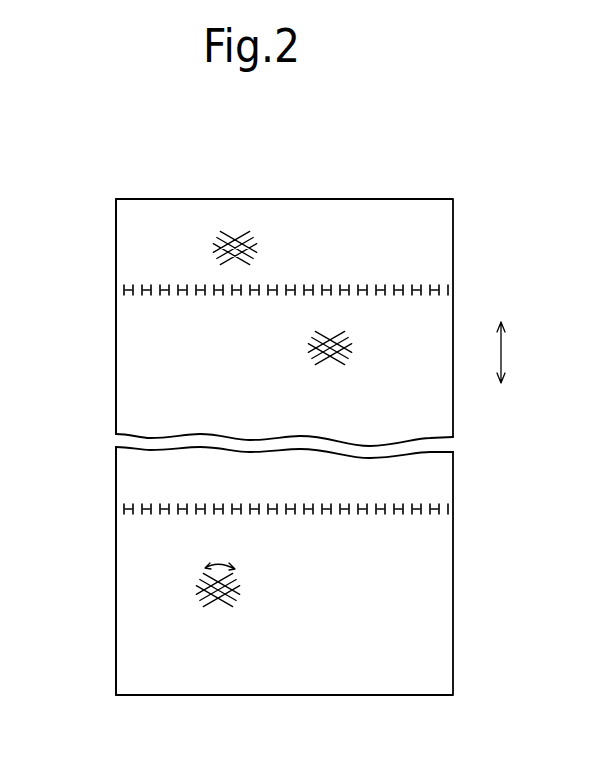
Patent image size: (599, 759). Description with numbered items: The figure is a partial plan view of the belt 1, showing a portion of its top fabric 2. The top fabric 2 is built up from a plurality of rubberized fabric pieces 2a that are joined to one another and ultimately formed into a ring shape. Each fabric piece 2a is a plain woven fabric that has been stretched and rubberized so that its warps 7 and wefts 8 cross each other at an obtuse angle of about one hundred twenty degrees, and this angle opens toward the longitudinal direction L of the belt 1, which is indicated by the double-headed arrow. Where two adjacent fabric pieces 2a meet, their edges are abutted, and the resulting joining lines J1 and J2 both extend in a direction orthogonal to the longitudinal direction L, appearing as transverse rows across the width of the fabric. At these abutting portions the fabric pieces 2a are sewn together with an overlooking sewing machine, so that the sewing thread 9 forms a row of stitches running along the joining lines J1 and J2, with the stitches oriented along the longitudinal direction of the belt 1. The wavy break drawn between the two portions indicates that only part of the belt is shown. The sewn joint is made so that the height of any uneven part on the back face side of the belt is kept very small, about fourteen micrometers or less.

The knitted fabric 1 is at (293, 162).
The top fabric 2 is at (423, 199).
The fabric piece 2a is at (128, 240).
The warp 7 is at (212, 245).
The weft 8 is at (243, 234).
The sewing thread 9 is at (137, 294).
The joining line J1 is at (410, 288).
The joining line J2 is at (407, 503).
The longitudinal direction L is at (515, 352).